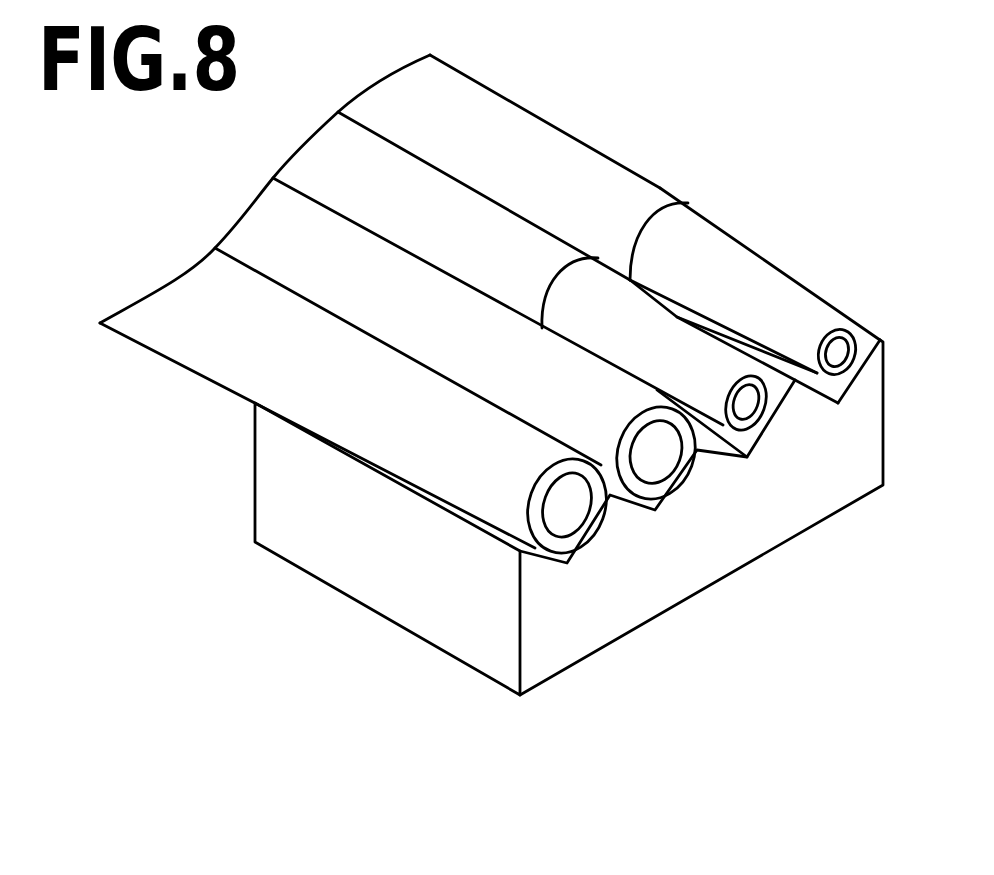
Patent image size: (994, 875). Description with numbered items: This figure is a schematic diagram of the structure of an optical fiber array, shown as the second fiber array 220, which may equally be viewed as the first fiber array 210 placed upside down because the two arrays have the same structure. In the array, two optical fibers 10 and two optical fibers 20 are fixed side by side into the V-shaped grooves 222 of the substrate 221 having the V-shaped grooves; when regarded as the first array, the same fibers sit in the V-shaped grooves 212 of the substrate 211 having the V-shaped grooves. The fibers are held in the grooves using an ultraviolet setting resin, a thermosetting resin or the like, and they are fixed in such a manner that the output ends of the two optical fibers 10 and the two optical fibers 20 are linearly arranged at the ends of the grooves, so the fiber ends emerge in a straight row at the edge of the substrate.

The optical fiber 10 is at (714, 364).
The optical fiber 20 is at (330, 330).
The second fiber array 220 is at (411, 284).
The first fiber array 210 is at (607, 117).
The substrate having V-shaped grooves 221 is at (569, 539).
The substrate having V-shaped grooves 211 is at (383, 613).
The V-shaped groove 222 is at (715, 532).
The V-shaped groove 212 is at (838, 404).